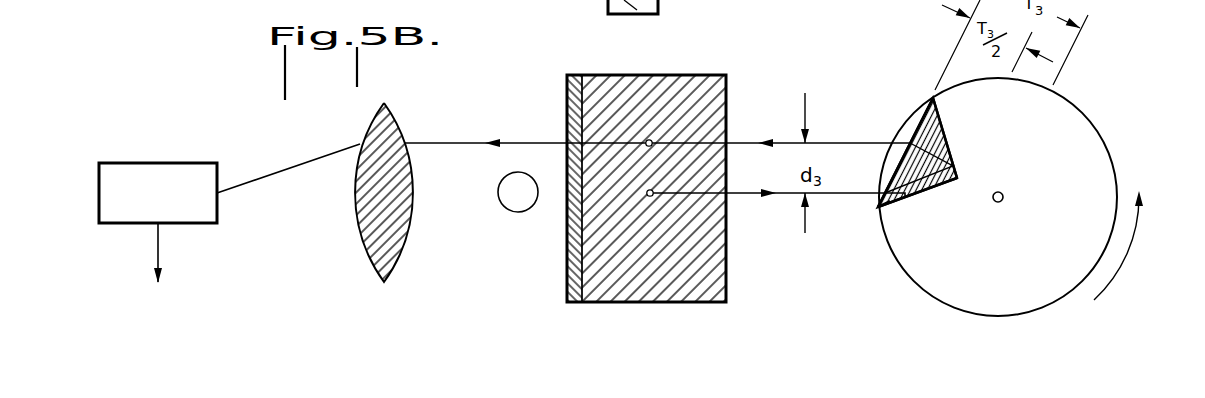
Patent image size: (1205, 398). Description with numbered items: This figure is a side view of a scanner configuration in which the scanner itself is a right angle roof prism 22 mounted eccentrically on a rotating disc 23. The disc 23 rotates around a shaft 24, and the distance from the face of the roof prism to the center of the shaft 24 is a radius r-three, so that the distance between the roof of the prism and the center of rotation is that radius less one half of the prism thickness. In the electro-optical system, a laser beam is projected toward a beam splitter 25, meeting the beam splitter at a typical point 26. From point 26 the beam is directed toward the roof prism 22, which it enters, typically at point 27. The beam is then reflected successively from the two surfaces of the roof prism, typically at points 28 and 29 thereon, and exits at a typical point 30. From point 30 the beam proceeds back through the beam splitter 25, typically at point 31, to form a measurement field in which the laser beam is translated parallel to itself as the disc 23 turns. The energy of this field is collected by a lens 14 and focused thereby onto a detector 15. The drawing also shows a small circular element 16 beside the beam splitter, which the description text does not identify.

The lens 14 is at (395, 118).
The detector 15 is at (217, 163).
The light source 16 is at (512, 211).
The right angle roof prism 22 is at (940, 184).
The rotating disc 23 is at (1095, 125).
The shaft 24 is at (1003, 196).
The beam splitter 25 is at (726, 75).
The typical point 26 is at (650, 197).
The typical point 27 is at (880, 198).
The typical point 28 is at (910, 200).
The typical point 29 is at (953, 166).
The typical point 30 is at (910, 142).
The typical point 31 is at (649, 139).